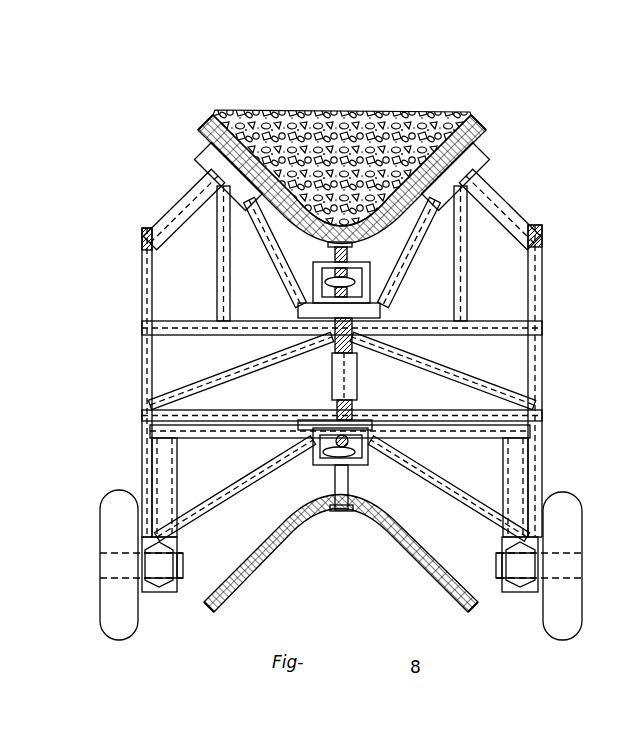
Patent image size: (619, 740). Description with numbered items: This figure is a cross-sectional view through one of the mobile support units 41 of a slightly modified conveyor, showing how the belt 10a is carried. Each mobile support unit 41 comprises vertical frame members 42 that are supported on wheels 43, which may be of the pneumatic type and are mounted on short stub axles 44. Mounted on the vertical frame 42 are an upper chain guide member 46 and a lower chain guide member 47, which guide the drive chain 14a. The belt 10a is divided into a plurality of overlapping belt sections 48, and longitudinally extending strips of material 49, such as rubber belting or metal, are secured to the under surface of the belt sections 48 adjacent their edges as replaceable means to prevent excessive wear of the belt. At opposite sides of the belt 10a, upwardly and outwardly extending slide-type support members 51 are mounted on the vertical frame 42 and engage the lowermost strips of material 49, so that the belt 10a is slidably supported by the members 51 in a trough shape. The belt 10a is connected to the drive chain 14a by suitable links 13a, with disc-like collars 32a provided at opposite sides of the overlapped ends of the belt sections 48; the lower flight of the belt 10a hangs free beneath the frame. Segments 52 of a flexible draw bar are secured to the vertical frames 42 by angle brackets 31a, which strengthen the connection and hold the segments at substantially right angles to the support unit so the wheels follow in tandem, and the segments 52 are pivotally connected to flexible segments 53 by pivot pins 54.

The belt 10a is at (486, 120).
The links 13a is at (334, 246).
The drive chain 14a is at (356, 283).
The angle brackets 31a is at (239, 413).
The disc-like collars 32a is at (342, 518).
The mobile support units 41 is at (341, 355).
The vertical frame members 42 is at (141, 351).
The wheels 43 is at (112, 492).
The stub axles 44 is at (183, 560).
The upper chain guide member 46 is at (371, 284).
The lower chain guide member 47 is at (368, 425).
The belt sections 48 is at (246, 158).
The strips of material 49 is at (211, 117).
The slide-type support members 51 is at (196, 156).
The draw bar segments 52 is at (338, 400).
The flexible segments 53 is at (358, 356).
The pivot pins 54 is at (334, 352).